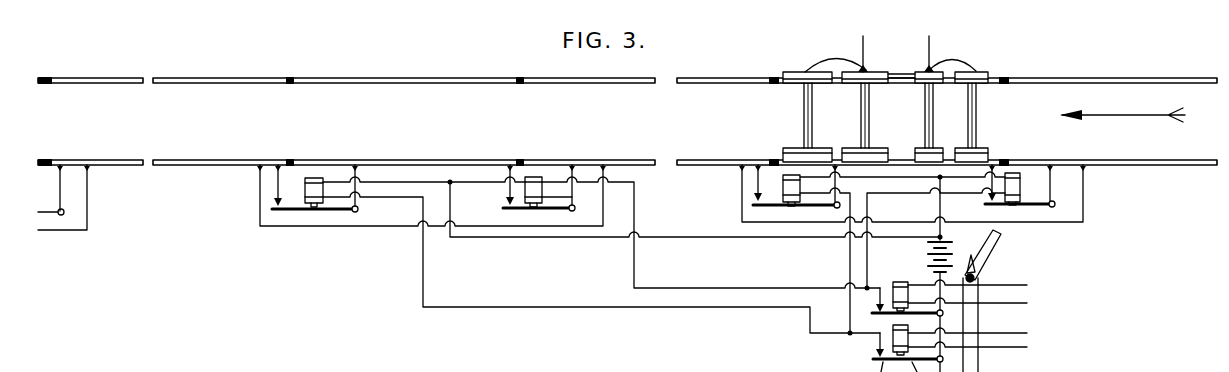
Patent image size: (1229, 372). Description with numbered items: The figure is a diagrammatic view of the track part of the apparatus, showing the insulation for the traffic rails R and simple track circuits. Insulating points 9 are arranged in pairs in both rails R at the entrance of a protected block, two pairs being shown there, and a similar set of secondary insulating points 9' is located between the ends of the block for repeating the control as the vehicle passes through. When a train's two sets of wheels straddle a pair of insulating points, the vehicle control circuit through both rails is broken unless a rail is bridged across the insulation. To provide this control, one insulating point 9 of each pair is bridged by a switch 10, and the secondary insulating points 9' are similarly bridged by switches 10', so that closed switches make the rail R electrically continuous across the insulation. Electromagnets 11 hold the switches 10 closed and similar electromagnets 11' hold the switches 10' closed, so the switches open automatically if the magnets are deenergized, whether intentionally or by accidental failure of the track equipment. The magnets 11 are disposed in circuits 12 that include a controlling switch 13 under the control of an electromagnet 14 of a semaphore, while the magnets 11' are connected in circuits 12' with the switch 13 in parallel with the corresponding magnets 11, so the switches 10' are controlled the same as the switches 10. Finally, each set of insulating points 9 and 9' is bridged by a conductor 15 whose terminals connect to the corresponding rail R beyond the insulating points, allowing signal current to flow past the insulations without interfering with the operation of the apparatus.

The traffic rails R is at (400, 84).
The insulating points 9 is at (883, 121).
The secondary insulating points 9' is at (413, 121).
The switch 10 is at (924, 238).
The switch 10' is at (427, 241).
The electromagnet 11 is at (921, 189).
The electromagnet 11' is at (367, 193).
The circuit 12 is at (727, 252).
The circuit 12' is at (601, 255).
The controlling switch 13 is at (876, 318).
The electromagnet of a semaphore 14 is at (898, 292).
The conductor 15 is at (1135, 227).